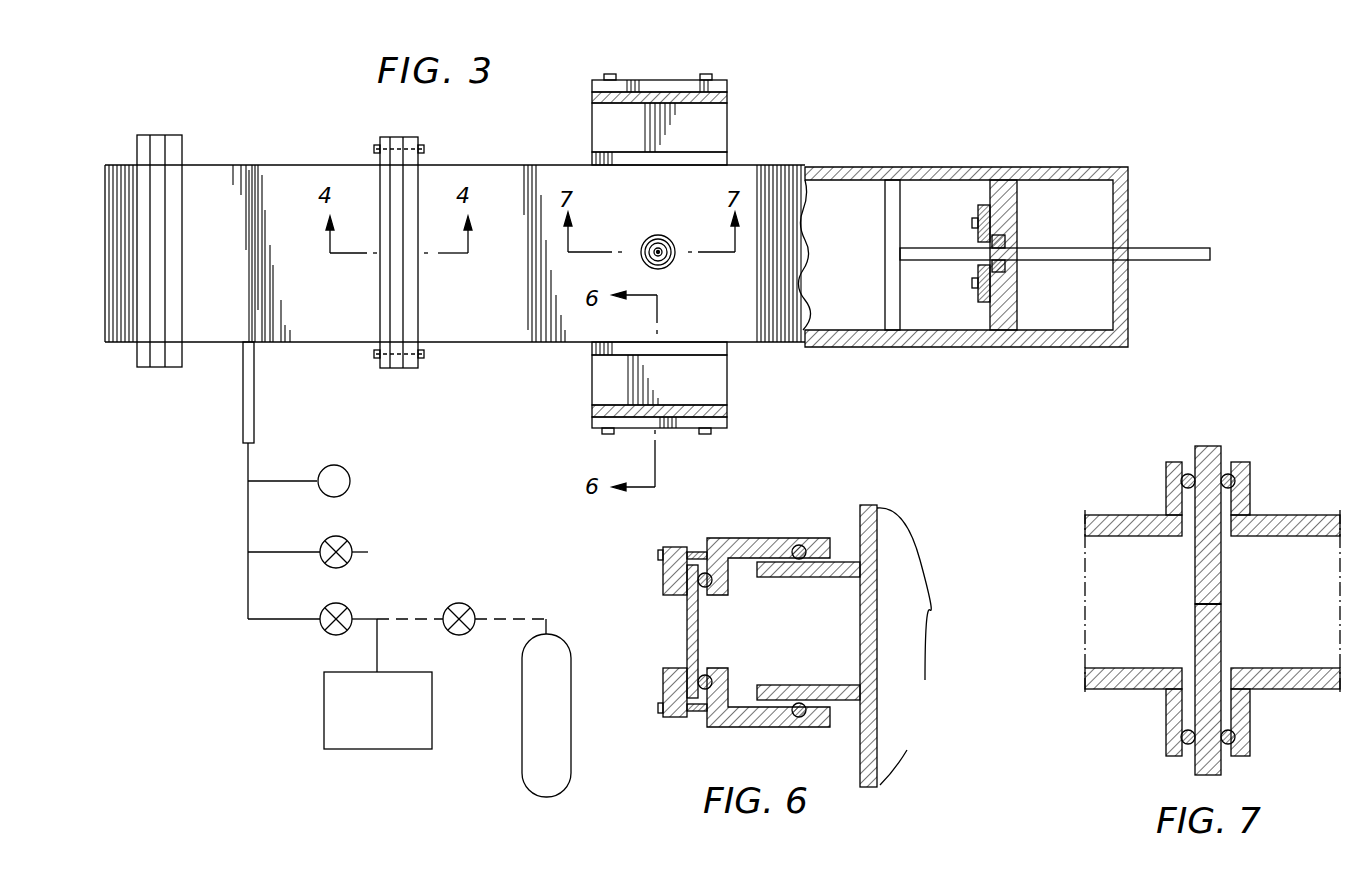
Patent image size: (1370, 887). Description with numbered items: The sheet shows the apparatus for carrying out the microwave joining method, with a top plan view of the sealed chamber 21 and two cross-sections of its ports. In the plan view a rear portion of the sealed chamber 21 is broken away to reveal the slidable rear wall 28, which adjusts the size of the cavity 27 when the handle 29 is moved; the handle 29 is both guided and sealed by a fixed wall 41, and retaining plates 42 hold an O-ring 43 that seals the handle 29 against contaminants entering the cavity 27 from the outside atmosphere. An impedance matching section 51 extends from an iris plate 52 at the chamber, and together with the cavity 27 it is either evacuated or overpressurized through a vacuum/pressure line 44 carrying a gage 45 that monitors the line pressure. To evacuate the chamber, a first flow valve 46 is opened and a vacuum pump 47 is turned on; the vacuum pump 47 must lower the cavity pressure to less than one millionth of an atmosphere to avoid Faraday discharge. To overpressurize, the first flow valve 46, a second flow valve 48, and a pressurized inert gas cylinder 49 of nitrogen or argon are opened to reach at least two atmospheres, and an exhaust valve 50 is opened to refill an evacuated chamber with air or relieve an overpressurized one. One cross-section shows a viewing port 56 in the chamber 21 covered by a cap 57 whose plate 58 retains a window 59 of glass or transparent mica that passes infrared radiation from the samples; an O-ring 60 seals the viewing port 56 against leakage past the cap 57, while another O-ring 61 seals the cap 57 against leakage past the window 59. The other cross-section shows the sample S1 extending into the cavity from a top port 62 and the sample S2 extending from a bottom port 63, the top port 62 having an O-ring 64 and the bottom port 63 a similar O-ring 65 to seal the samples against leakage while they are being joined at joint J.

In FIG. 3, the sealed chamber 21 is at (762, 165).
In FIG. 6, the sealed chamber 21 is at (860, 560).
In FIG. 7, the sealed chamber 21 is at (1324, 515).
In FIG. 3, the cavity 27 is at (827, 197).
In FIG. 7, the cavity 27 is at (1152, 608).
In FIG. 3, the slidable rear wall 28 is at (900, 330).
In FIG. 3, the handle 29 is at (1148, 248).
In FIG. 3, the fixed wall 41 is at (1017, 215).
In FIG. 3, the retaining plates 42 is at (976, 232).
In FIG. 3, the O-ring 43 is at (1012, 270).
In FIG. 3, the vacuum/pressure line 44 is at (254, 395).
In FIG. 3, the gage 45 is at (349, 468).
In FIG. 3, the first flow valve 46 is at (350, 603).
In FIG. 3, the vacuum pump 47 is at (324, 708).
In FIG. 3, the second flow valve 48 is at (469, 603).
In FIG. 3, the pressurized inert gas cylinder 49 is at (522, 730).
In FIG. 3, the exhaust valve 50 is at (349, 535).
In FIG. 3, the impedance matching section 51 is at (272, 190).
In FIG. 3, the iris plate 52 is at (396, 137).
In FIG. 3, the viewing port 56 is at (592, 163).
In FIG. 6, the viewing port 56 is at (838, 562).
In FIG. 3, the cap 57 is at (592, 120).
In FIG. 6, the cap 57 is at (715, 535).
In FIG. 3, the plate 58 is at (650, 80).
In FIG. 6, the plate 58 is at (665, 572).
In FIG. 3, the window 59 is at (592, 95).
In FIG. 6, the window 59 is at (687, 643).
In FIG. 6, the O-ring 60 is at (795, 547).
In FIG. 6, the O-ring 61 is at (705, 588).
In FIG. 3, the top port 62 is at (643, 240).
In FIG. 7, the top port 62 is at (1250, 501).
In FIG. 7, the bottom port 63 is at (1250, 708).
In FIG. 7, the O-ring 64 is at (1185, 474).
In FIG. 7, the O-ring 65 is at (1186, 744).
In FIG. 3, the sample S1 is at (663, 238).
In FIG. 7, the sample S1 is at (1221, 554).
In FIG. 7, the sample S2 is at (1221, 623).
In FIG. 7, the joint J is at (1221, 604).